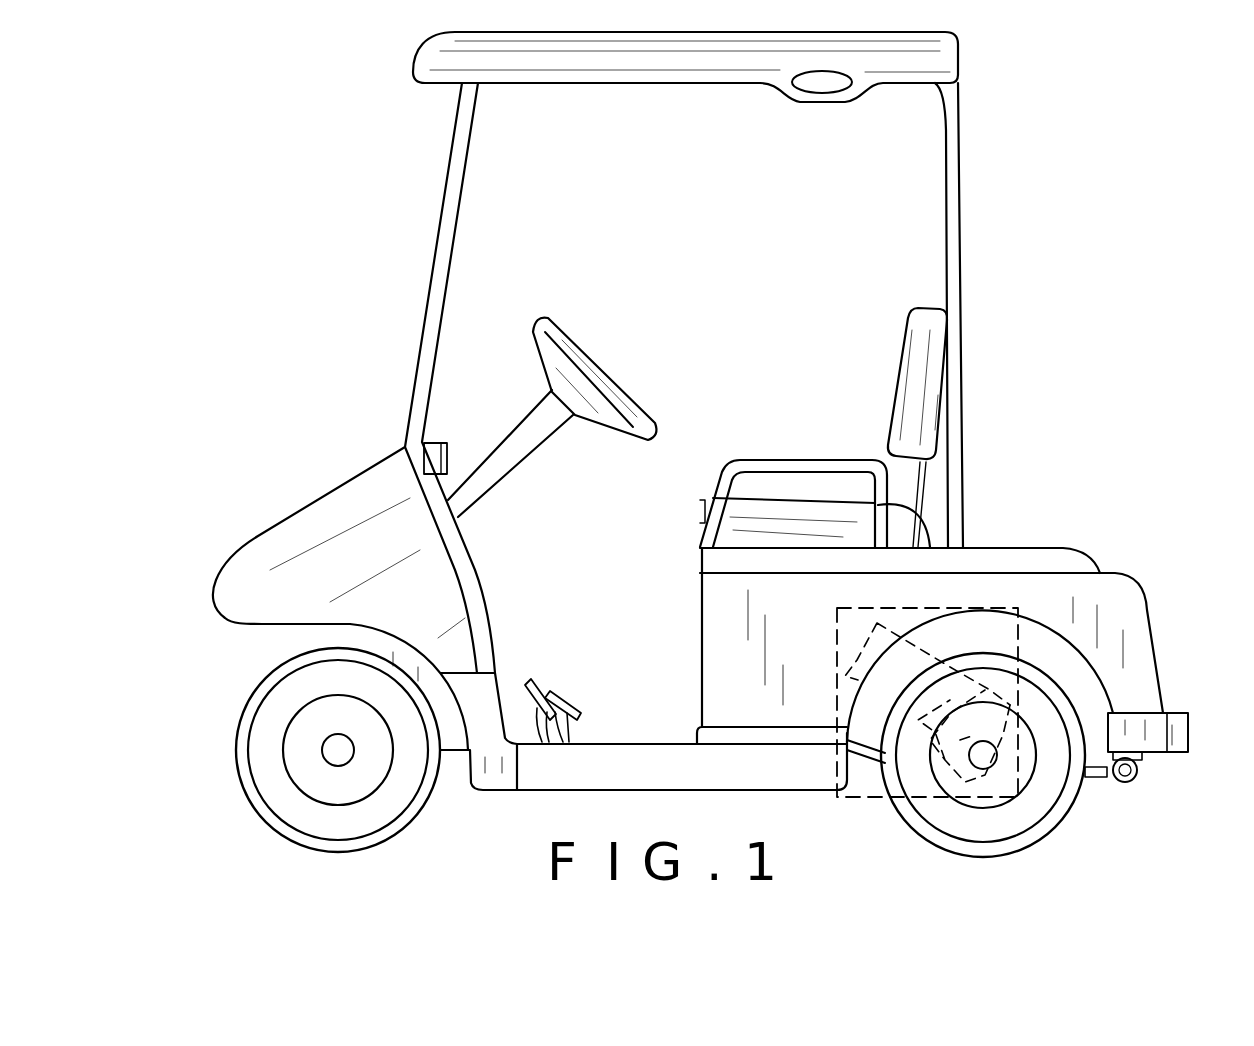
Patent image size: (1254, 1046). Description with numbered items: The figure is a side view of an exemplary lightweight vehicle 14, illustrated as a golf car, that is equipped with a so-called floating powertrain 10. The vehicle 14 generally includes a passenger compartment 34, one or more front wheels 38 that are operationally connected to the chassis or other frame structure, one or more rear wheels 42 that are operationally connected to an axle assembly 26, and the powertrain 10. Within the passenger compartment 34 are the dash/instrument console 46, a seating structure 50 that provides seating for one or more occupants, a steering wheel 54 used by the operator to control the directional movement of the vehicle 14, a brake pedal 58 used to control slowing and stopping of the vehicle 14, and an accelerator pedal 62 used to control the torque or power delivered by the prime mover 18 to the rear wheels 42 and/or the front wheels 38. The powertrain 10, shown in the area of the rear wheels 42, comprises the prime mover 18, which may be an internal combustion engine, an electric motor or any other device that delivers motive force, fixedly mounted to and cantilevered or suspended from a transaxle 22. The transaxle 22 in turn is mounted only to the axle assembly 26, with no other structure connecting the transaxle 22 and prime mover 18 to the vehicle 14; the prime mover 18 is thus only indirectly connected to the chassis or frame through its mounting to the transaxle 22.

The vehicle 14 is at (1065, 170).
The passenger compartment 34 is at (743, 283).
The steering wheel 54 is at (568, 353).
The dash/instrument console 46 is at (431, 440).
The seating structure 50 is at (887, 420).
The accelerator pedal 62 is at (547, 680).
The brake pedal 58 is at (555, 695).
The front wheels 38 is at (270, 767).
The rear wheels 42 is at (1048, 783).
The axle assembly 26 is at (982, 763).
The powertrain 10 is at (947, 608).
The prime mover 18 is at (938, 657).
The transaxle 22 is at (1000, 725).